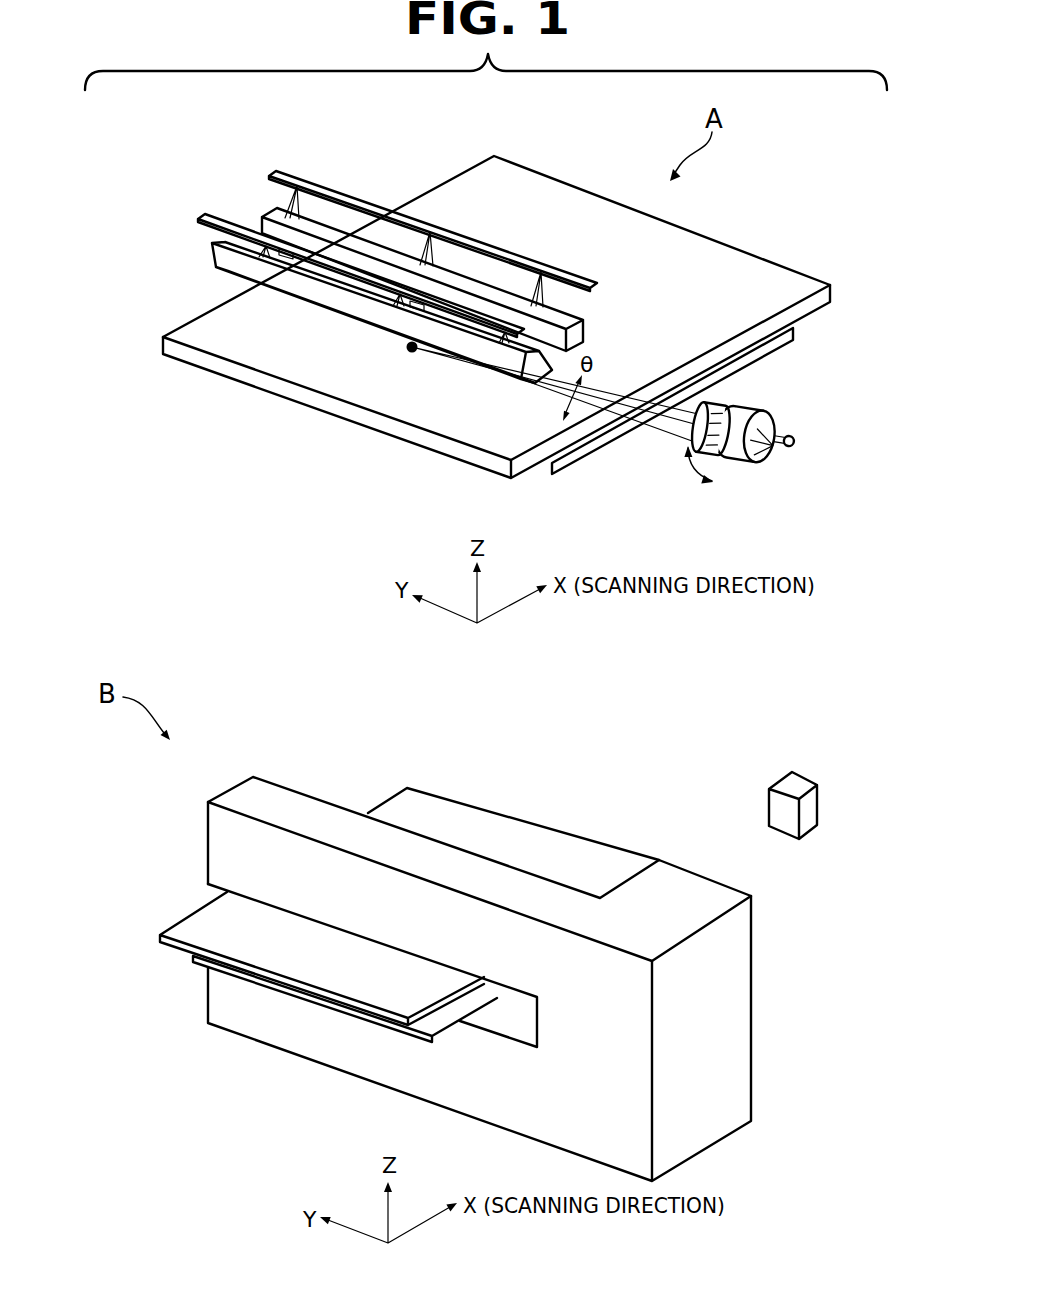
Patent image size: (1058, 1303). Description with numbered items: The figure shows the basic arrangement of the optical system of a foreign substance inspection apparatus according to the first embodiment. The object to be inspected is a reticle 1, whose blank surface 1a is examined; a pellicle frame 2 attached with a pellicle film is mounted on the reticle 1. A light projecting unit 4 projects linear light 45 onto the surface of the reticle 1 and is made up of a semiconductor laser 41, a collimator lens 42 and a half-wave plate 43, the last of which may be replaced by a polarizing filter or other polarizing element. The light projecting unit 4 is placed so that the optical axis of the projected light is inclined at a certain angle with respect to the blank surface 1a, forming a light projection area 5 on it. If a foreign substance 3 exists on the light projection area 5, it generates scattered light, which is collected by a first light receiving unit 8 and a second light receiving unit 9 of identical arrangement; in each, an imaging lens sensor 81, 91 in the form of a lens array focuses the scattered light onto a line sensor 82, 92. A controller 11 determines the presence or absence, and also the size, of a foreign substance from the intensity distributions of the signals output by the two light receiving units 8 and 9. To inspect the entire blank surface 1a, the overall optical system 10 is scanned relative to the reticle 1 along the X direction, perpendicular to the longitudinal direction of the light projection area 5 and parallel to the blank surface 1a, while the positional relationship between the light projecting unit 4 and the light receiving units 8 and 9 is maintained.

The reticle 1 is at (228, 365).
The blank surface 1a is at (203, 327).
The pellicle frame 2 is at (592, 451).
The foreign substance 3 is at (408, 350).
The light projecting unit 4 is at (793, 354).
The semiconductor laser 41 is at (797, 442).
The collimator lens 42 is at (757, 413).
The λ/2 plate 43 is at (713, 403).
The linear light 45 is at (670, 420).
The light projection area 5 is at (490, 372).
The first light receiving unit 8 is at (177, 113).
The imaging lens sensor 81 is at (262, 212).
The line sensor 82 is at (283, 170).
The second light receiving unit 9 is at (130, 195).
The imaging lens sensor 91 is at (213, 245).
The line sensor 92 is at (205, 213).
The overall optical system 10 is at (270, 803).
The controller 11 is at (819, 792).